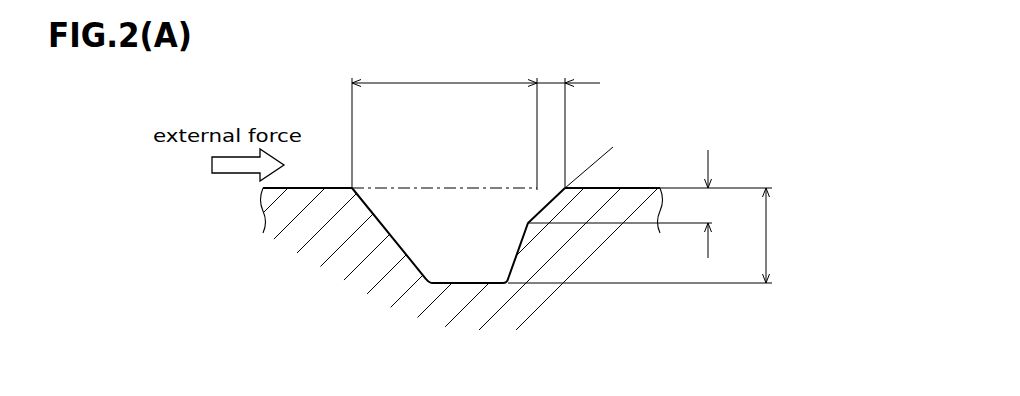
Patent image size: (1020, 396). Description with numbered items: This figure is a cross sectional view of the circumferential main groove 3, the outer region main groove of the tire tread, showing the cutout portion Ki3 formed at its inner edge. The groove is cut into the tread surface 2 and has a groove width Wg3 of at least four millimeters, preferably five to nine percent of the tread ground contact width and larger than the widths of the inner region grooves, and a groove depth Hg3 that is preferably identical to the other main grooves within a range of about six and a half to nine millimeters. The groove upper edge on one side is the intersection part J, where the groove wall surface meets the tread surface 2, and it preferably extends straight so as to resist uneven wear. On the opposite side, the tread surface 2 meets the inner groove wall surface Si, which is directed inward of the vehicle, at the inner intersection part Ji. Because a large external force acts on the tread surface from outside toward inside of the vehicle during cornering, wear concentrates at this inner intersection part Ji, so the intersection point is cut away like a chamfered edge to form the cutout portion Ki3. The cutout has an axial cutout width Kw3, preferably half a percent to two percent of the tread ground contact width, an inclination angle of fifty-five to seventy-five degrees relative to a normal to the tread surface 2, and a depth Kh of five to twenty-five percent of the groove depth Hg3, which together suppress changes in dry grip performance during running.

The tread surface 2 is at (632, 188).
The circumferential main groove 3 is at (467, 242).
The intersection part J is at (351, 186).
The groove width Wg3 is at (458, 122).
The axial cutout width Kw3 is at (562, 70).
The cutout portion Ki3 is at (558, 188).
The inner intersection part Ji is at (531, 186).
The depth of cutout portion Kh is at (709, 206).
The groove depth Hg3 is at (673, 235).
The inner groove wall surface Si is at (526, 232).